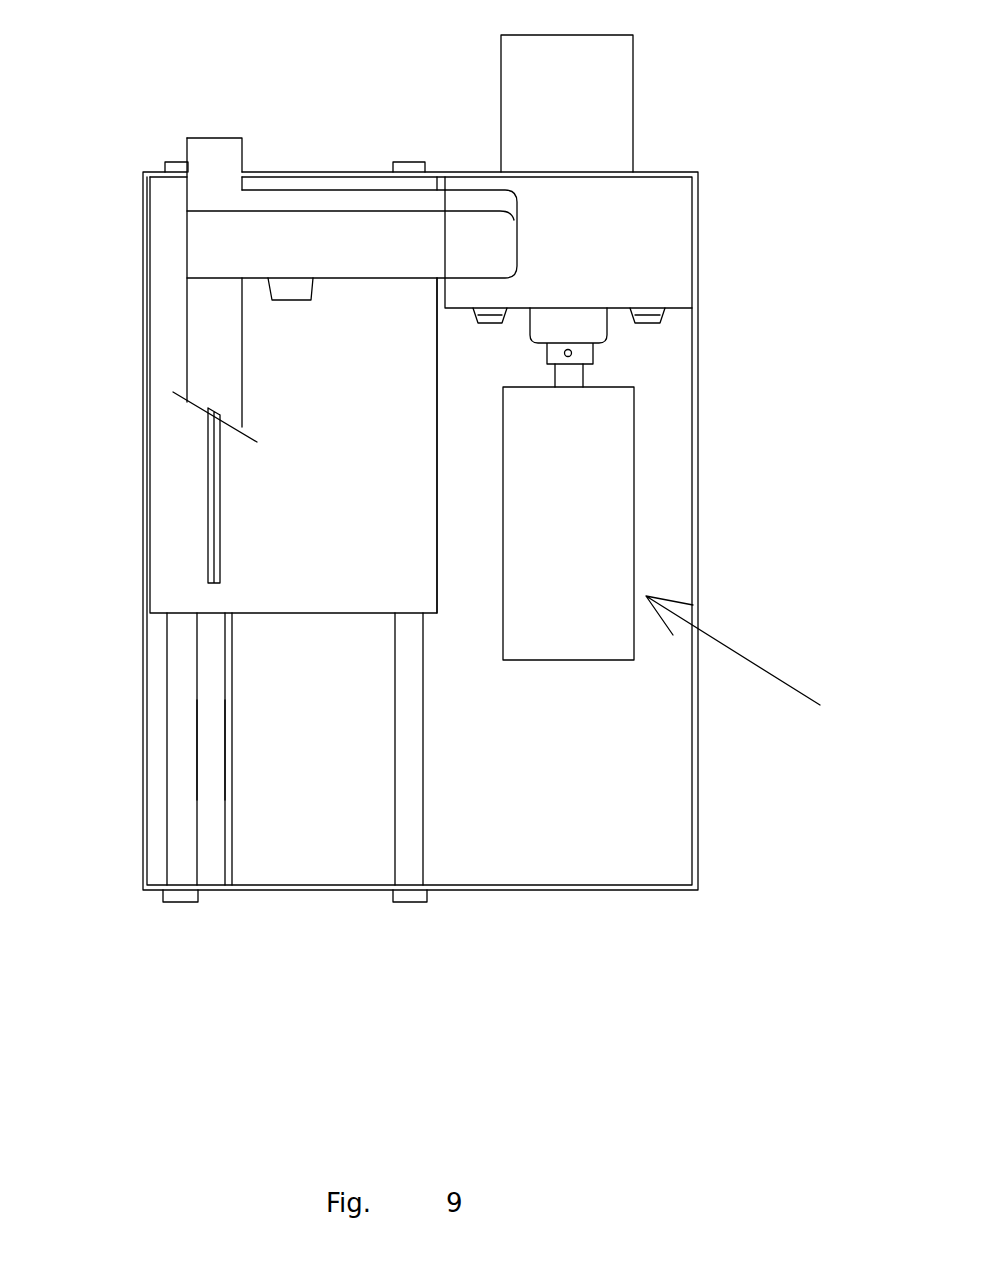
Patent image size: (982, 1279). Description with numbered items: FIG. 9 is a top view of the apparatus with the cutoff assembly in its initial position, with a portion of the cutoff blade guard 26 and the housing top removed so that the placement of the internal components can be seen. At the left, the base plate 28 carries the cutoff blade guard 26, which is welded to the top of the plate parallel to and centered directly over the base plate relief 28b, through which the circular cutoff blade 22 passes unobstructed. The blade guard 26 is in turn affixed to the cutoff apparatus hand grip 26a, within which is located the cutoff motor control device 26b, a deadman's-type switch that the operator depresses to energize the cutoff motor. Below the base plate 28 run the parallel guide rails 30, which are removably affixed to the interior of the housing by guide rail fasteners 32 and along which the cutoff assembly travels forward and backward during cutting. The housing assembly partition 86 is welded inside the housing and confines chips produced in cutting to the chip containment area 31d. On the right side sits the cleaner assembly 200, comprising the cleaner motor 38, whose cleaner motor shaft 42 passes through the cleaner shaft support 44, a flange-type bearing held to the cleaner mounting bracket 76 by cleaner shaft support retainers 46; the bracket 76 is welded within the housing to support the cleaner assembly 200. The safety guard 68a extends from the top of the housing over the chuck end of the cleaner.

The guide rail fastener 32 is at (405, 162).
The safety guard 68a is at (520, 85).
The base plate 28 is at (183, 592).
The cutoff blade guard 26 is at (230, 378).
The cutoff apparatus hand grip 26a is at (493, 244).
The cutoff motor control device 26b is at (296, 290).
The cleaner mounting bracket 76 is at (662, 285).
The cleaner shaft support retainer 46 is at (483, 325).
The cleaner shaft support 44 is at (572, 326).
The cleaner motor shaft 42 is at (570, 380).
The cleaner motor 38 is at (565, 647).
The cleaner assembly 200 is at (762, 663).
The base plate relief 28b is at (223, 445).
The circular cutoff blade 22 is at (217, 545).
The guide rail 30 is at (182, 737).
The housing assembly partition 86 is at (232, 765).
The chip containment area 31d is at (212, 808).